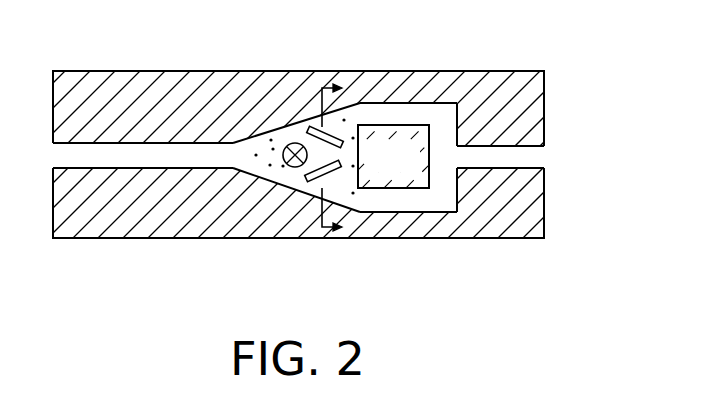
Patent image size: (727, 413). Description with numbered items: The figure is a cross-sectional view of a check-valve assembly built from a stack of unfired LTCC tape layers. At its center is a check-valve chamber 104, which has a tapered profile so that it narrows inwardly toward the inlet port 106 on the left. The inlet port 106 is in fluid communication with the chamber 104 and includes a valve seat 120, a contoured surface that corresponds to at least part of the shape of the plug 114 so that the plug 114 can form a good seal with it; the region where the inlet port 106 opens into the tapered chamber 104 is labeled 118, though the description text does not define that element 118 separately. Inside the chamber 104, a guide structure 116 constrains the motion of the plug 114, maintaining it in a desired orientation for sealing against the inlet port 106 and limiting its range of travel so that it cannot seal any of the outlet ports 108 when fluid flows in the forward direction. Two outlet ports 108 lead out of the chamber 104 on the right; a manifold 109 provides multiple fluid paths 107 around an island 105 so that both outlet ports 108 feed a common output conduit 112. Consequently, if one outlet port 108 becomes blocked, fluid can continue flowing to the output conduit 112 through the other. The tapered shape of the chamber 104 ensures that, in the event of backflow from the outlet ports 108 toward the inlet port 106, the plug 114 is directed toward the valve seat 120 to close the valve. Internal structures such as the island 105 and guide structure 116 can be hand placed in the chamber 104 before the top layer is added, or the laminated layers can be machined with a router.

The valve seat 120 is at (158, 96).
The inlet channel upper wall 118 is at (233, 143).
The inlet port 106 is at (233, 170).
The check-valve chamber 104 is at (312, 188).
The plug 114 is at (270, 137).
The guide structure 116 is at (297, 144).
The outlet port 108 is at (358, 113).
The fluid paths 107 is at (403, 113).
The manifold 109 is at (445, 120).
The output conduit 112 is at (502, 163).
The island 105 is at (414, 170).